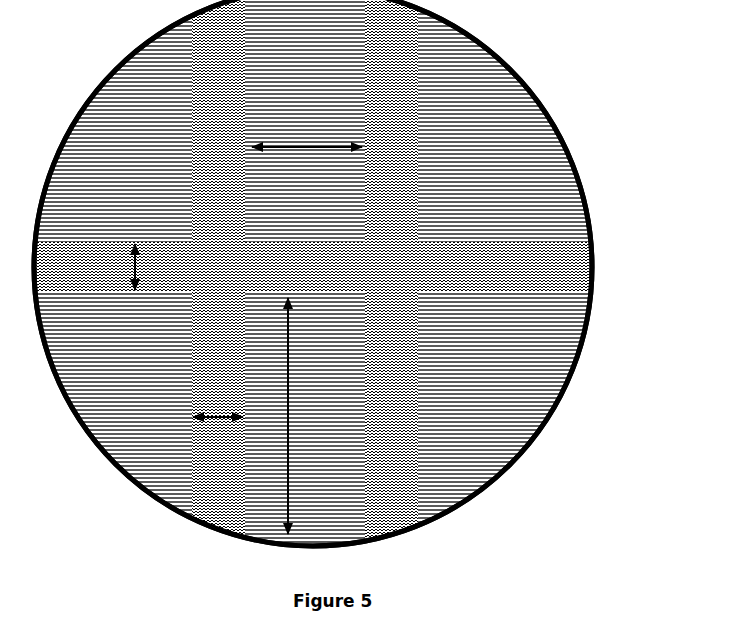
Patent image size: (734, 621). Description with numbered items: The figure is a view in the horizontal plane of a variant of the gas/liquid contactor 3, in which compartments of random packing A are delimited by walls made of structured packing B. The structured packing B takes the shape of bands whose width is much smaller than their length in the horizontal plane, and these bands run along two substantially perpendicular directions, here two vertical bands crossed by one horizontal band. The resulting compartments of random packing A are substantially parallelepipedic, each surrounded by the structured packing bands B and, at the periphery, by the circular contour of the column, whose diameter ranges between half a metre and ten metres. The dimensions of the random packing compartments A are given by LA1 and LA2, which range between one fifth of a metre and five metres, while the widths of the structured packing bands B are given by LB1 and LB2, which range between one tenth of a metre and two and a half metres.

The gas/liquid contactor 3 is at (594, 324).
The random packing A is at (534, 136).
The structured packing B is at (402, 441).
The dimension of random packing compartment LA1 is at (307, 172).
The dimension of random packing compartment LA2 is at (313, 416).
The dimension of structured packing band LB1 is at (218, 396).
The dimension of structured packing band LB2 is at (171, 267).